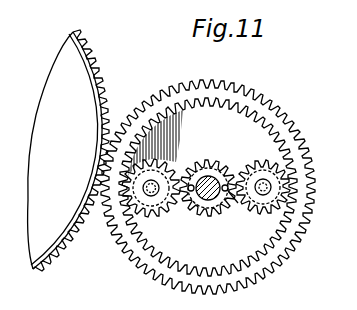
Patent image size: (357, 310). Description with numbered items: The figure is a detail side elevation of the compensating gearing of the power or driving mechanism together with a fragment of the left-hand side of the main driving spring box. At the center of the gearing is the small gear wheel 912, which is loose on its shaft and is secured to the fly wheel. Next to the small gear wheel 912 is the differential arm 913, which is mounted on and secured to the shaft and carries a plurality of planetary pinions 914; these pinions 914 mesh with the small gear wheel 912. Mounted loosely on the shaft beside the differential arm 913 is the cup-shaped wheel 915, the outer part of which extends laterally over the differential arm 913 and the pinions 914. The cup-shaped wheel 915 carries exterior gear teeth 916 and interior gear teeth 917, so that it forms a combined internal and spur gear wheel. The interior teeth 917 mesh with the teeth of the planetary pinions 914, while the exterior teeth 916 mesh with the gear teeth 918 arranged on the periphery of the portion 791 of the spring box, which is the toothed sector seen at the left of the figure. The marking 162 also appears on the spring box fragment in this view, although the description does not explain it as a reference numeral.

The sector arm 162 is at (53, 150).
The portion of the spring box 791 is at (53, 150).
The gear teeth 918 is at (92, 56).
The exterior gear teeth 916 is at (152, 97).
The interior gear teeth 917 is at (204, 101).
The differential arm 913 is at (154, 162).
The small gear wheel 912 is at (221, 160).
The planetary pinions 914 is at (243, 205).
The cup-shaped wheel 915 is at (230, 206).